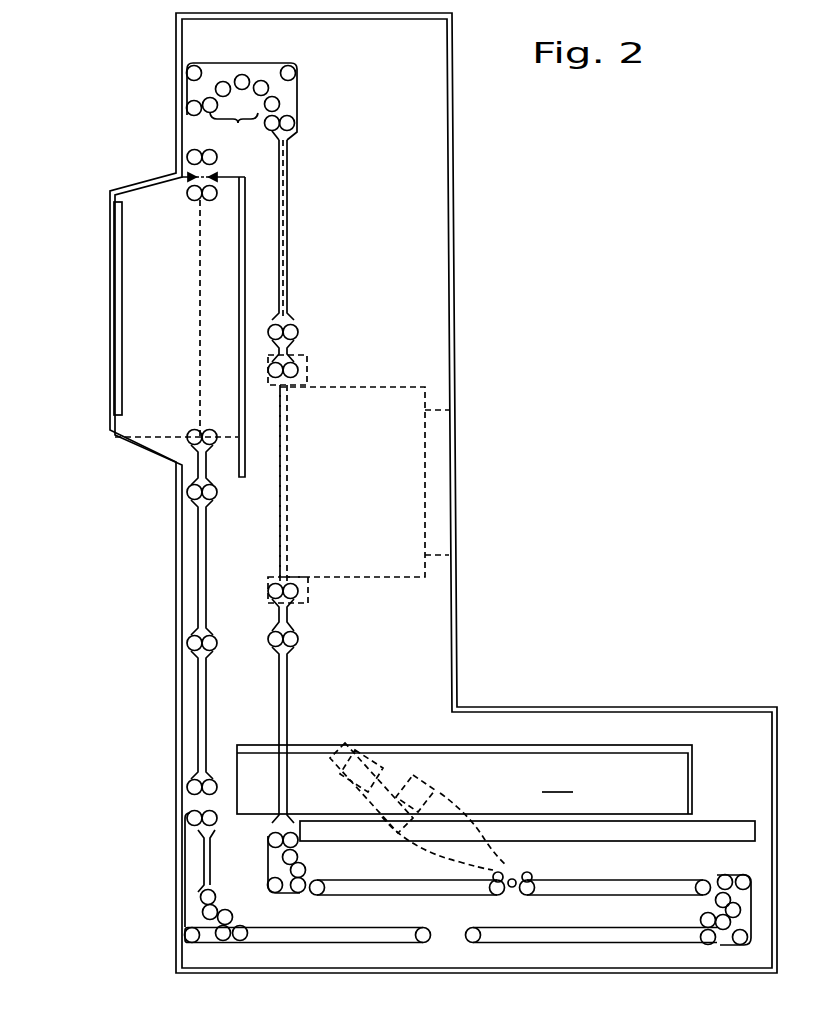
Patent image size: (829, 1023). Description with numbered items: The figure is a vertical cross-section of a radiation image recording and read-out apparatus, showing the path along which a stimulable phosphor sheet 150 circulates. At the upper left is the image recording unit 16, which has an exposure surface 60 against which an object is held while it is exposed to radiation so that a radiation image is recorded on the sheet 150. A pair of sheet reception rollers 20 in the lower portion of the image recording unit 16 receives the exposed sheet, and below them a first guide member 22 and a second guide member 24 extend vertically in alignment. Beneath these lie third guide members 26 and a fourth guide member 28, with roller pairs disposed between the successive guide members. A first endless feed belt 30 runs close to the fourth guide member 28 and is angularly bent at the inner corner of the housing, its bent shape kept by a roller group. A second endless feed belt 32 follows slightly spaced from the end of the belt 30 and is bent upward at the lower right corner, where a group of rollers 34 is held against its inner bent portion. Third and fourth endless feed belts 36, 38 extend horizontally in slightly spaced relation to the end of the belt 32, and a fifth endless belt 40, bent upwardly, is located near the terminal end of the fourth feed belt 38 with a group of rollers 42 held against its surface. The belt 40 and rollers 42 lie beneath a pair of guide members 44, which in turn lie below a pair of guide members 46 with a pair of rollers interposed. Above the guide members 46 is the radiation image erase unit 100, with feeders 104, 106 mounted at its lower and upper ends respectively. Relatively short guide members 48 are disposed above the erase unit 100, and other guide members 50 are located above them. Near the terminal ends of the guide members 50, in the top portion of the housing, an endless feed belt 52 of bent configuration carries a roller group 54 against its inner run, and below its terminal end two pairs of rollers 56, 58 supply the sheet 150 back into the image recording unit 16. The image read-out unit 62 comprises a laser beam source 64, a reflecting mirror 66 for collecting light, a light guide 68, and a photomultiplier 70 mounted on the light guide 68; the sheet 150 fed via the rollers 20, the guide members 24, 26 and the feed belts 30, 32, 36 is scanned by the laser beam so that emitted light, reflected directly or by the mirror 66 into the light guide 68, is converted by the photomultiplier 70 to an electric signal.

The image recording unit 16 is at (145, 317).
The sheet reception rollers 20 is at (190, 430).
The first guide member 22 is at (206, 463).
The second guide member 24 is at (199, 563).
The third guide members 26 is at (198, 713).
The fourth guide member 28 is at (208, 857).
The first endless feed belt 30 is at (192, 895).
The second endless feed belt 32 is at (535, 943).
The group of rollers 34 is at (698, 903).
The third endless feed belt 36 is at (634, 886).
The fourth endless feed belt 38 is at (383, 889).
The fifth endless belt 40 is at (270, 877).
The group of rollers 42 is at (306, 843).
The pair of guide members 44 is at (279, 697).
The pair of guide members 46 is at (289, 620).
The relatively short guide members 48 is at (289, 350).
The guide members 50 is at (288, 238).
The endless feed belt 52 is at (285, 92).
The roller group 54 is at (241, 115).
The pair of rollers 56 is at (190, 149).
The pair of rollers 58 is at (187, 191).
The exposure surface 60 is at (113, 222).
The image read-out unit 62 is at (583, 742).
The laser beam source 64 is at (557, 777).
The reflecting mirror 66 is at (520, 867).
The light guide 68 is at (475, 812).
The photomultiplier 70 is at (343, 746).
The radiation image erase unit 100 is at (395, 483).
The feeder 104 is at (270, 585).
The feeder 106 is at (303, 359).
The stimulable phosphor sheet 150 is at (200, 287).